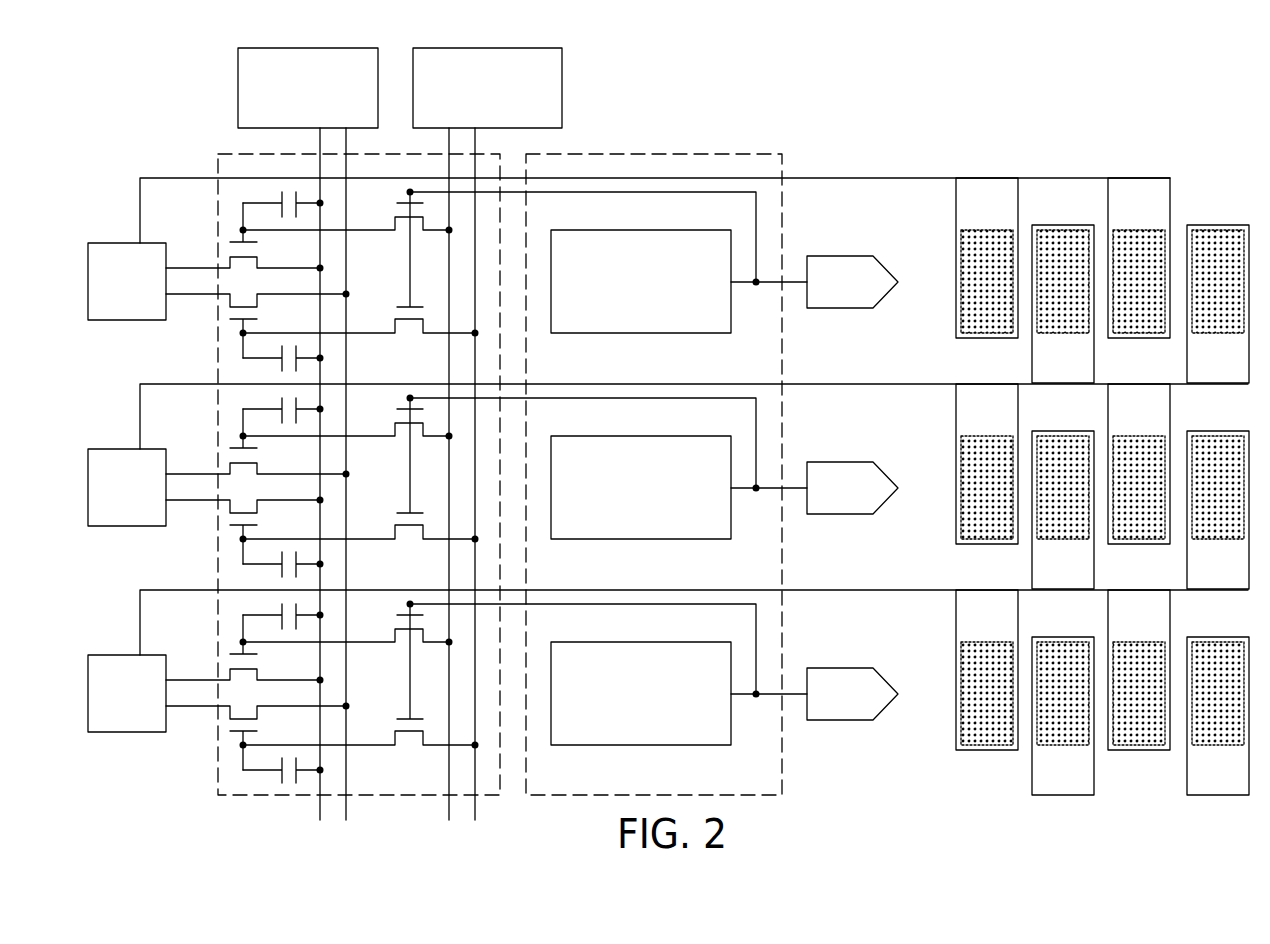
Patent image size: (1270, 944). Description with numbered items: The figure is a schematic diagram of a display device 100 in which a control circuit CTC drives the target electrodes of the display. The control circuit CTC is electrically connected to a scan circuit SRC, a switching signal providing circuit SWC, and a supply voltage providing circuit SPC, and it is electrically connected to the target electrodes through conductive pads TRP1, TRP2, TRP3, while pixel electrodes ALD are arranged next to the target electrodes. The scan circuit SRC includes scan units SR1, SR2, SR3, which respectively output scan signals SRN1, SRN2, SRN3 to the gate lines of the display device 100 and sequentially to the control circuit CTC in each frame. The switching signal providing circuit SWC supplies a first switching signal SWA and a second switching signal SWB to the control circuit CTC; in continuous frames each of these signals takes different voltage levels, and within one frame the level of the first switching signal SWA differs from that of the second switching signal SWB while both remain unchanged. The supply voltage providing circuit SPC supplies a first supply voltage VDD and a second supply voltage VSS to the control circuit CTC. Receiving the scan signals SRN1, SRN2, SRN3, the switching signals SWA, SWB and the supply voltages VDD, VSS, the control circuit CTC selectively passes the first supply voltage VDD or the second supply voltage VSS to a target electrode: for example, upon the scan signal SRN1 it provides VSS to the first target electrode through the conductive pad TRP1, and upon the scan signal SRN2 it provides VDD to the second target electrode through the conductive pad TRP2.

The display device 100 is at (150, 75).
The supply voltage providing circuit SPC is at (354, 114).
The switching signal providing circuit SWC is at (536, 114).
The control circuit CTC is at (218, 156).
The scan circuit SRC is at (782, 154).
The conductive pad TRP1 is at (106, 290).
The conductive pad TRP2 is at (127, 487).
The conductive pad TRP3 is at (127, 693).
The scan unit SR1 is at (641, 281).
The scan unit SR2 is at (641, 487).
The scan unit SR3 is at (641, 693).
The scan signal SRN1 is at (852, 282).
The scan signal SRN2 is at (852, 488).
The scan signal SRN3 is at (852, 694).
The pixel electrode ALD is at (1230, 228).
The second supply voltage VSS is at (303, 488).
The first supply voltage VDD is at (365, 488).
The first switching signal SWA is at (432, 488).
The second switching signal SWB is at (491, 488).